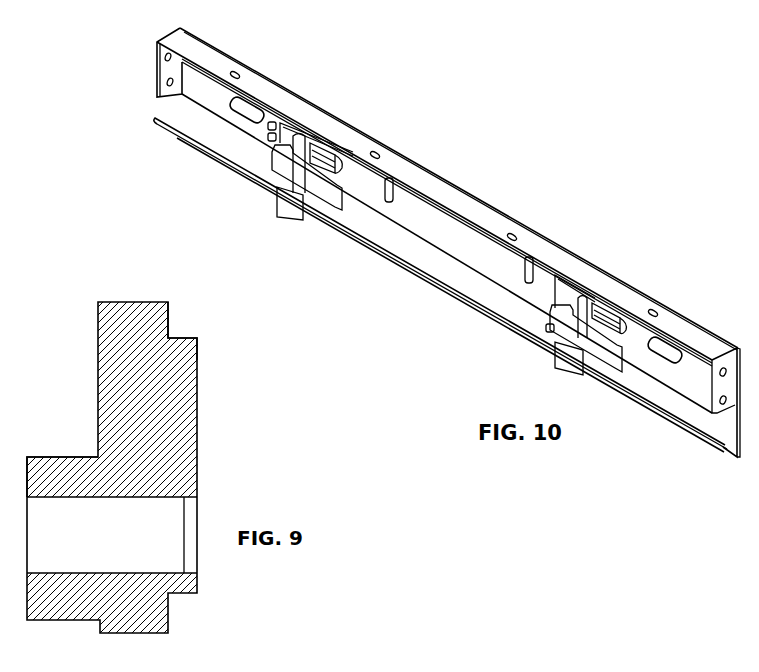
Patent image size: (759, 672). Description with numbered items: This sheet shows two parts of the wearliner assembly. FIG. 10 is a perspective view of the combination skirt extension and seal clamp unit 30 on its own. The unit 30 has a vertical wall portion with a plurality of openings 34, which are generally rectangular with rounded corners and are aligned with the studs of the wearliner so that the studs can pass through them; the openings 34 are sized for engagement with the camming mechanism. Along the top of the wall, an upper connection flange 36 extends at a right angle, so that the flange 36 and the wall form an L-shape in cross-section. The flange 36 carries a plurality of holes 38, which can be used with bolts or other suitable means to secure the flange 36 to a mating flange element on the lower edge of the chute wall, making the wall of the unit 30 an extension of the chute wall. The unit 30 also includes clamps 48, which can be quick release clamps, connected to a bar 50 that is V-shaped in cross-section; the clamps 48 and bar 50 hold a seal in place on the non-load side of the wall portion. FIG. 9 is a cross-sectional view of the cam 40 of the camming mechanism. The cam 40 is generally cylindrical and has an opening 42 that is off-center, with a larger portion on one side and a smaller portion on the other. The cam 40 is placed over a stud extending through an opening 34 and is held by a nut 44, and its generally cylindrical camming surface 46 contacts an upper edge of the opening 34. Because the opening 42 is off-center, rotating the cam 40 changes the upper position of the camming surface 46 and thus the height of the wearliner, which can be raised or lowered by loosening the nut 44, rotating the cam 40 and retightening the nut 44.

In FIG. 10, the skirt extension and seal clamp unit 30 is at (447, 244).
In FIG. 10, the openings 34 is at (248, 122).
In FIG. 10, the upper connection flange 36 is at (440, 187).
In FIG. 10, the holes 38 is at (241, 72).
In FIG. 9, the cam 40 is at (120, 302).
In FIG. 9, the opening 42 is at (160, 560).
In FIG. 9, the nut 44 is at (47, 457).
In FIG. 9, the camming surface 46 is at (190, 338).
In FIG. 10, the clamps 48 is at (300, 174).
In FIG. 10, the bar 50 is at (685, 422).